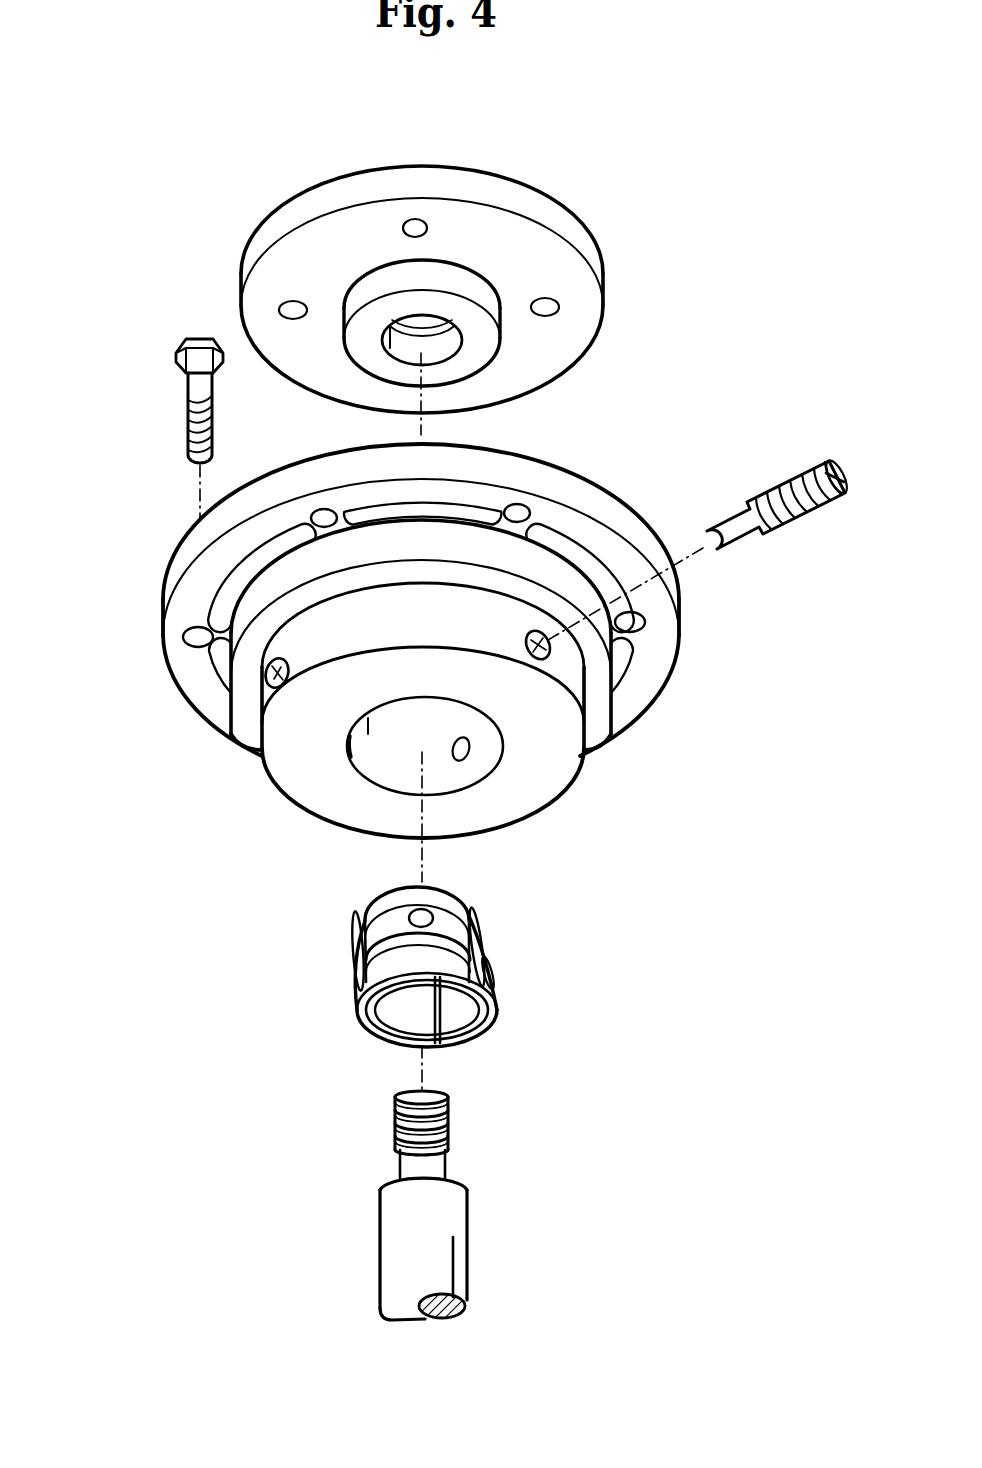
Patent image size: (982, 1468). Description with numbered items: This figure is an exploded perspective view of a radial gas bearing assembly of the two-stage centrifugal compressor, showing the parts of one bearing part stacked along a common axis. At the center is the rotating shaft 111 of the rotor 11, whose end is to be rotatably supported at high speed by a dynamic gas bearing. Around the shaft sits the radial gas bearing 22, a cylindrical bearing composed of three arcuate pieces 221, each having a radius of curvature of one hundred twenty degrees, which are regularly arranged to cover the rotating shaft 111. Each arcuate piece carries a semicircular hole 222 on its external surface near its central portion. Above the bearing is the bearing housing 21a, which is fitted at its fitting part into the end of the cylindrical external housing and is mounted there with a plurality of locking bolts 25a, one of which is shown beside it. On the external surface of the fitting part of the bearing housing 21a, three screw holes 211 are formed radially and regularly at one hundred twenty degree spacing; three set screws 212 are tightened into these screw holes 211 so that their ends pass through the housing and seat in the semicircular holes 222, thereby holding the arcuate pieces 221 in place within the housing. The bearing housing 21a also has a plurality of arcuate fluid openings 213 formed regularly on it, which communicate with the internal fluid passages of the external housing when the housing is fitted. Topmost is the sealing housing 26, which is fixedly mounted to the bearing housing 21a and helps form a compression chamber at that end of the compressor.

The rotor 11 is at (477, 1205).
The rotating shaft 111 is at (442, 1193).
The bearing housing 21a is at (390, 635).
The screw holes 211 is at (588, 650).
The set screws 212 is at (783, 527).
The arcuate fluid openings 213 is at (219, 669).
The radial gas bearing 22 is at (482, 941).
The arcuate pieces 221 is at (487, 960).
The semicircular hole 222 is at (416, 922).
The locking bolts 25a is at (186, 401).
The sealing housing 26 is at (567, 347).